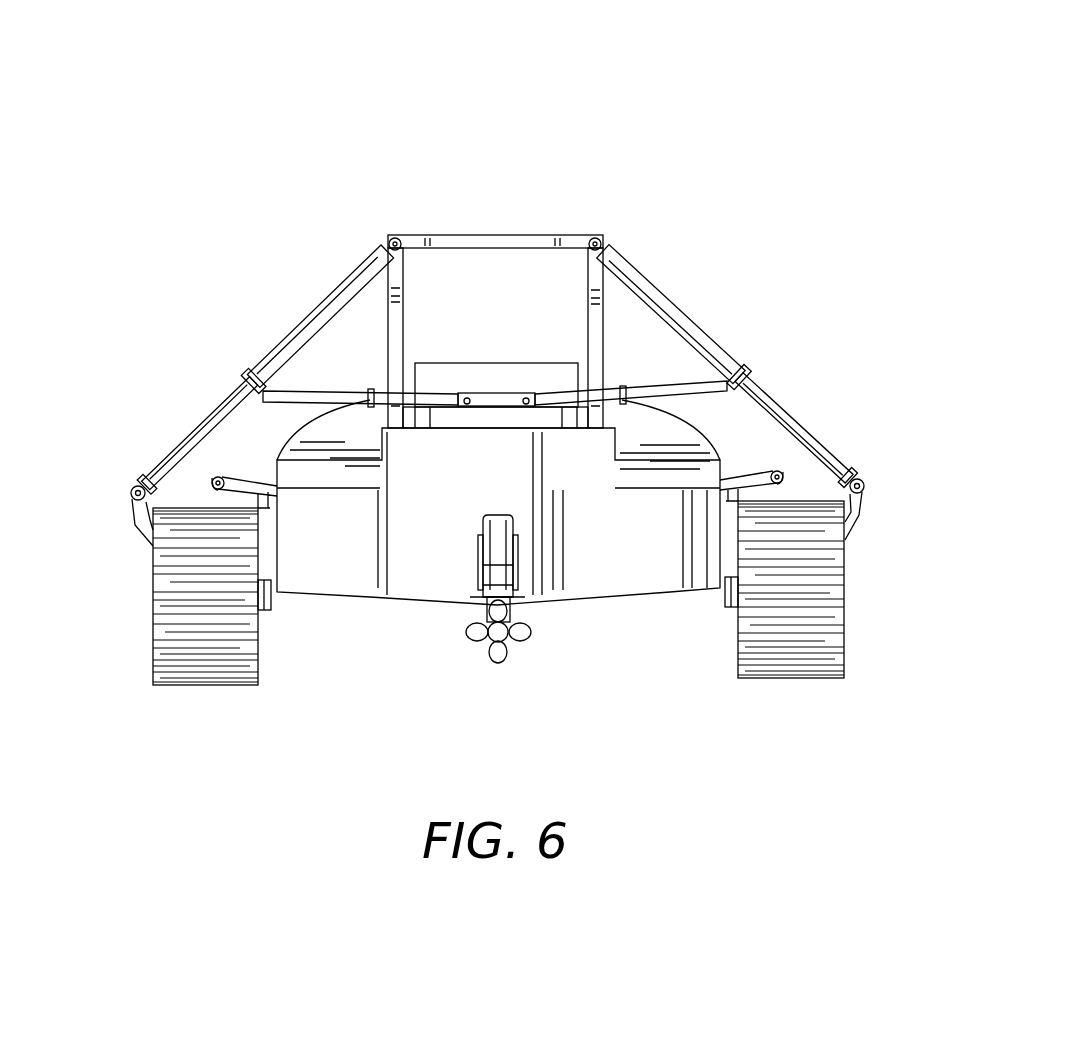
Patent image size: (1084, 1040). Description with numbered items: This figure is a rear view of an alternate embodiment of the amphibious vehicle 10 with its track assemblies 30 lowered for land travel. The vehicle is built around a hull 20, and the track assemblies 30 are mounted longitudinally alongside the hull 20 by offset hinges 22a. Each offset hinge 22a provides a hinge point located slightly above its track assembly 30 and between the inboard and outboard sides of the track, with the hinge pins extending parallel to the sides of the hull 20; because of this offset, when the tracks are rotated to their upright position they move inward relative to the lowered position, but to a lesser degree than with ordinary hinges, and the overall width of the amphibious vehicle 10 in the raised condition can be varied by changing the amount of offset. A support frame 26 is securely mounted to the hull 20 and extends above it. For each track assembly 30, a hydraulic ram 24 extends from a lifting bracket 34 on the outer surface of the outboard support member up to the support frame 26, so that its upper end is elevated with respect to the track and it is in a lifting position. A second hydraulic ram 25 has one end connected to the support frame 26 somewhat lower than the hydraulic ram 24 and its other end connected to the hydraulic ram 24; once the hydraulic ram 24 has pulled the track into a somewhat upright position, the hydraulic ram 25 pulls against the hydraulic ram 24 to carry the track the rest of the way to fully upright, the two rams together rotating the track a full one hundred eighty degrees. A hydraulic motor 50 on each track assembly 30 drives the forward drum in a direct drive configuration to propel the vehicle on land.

The amphibious vehicle 10 is at (689, 143).
The hull 20 is at (590, 606).
The offset hinges 22a is at (278, 498).
The hydraulic ram 24 is at (300, 318).
The hydraulic ram 25 is at (378, 388).
The support frame 26 is at (492, 235).
The track assemblies 30 is at (153, 672).
The lifting bracket 34 is at (140, 516).
The hydraulic motor 50 is at (270, 608).